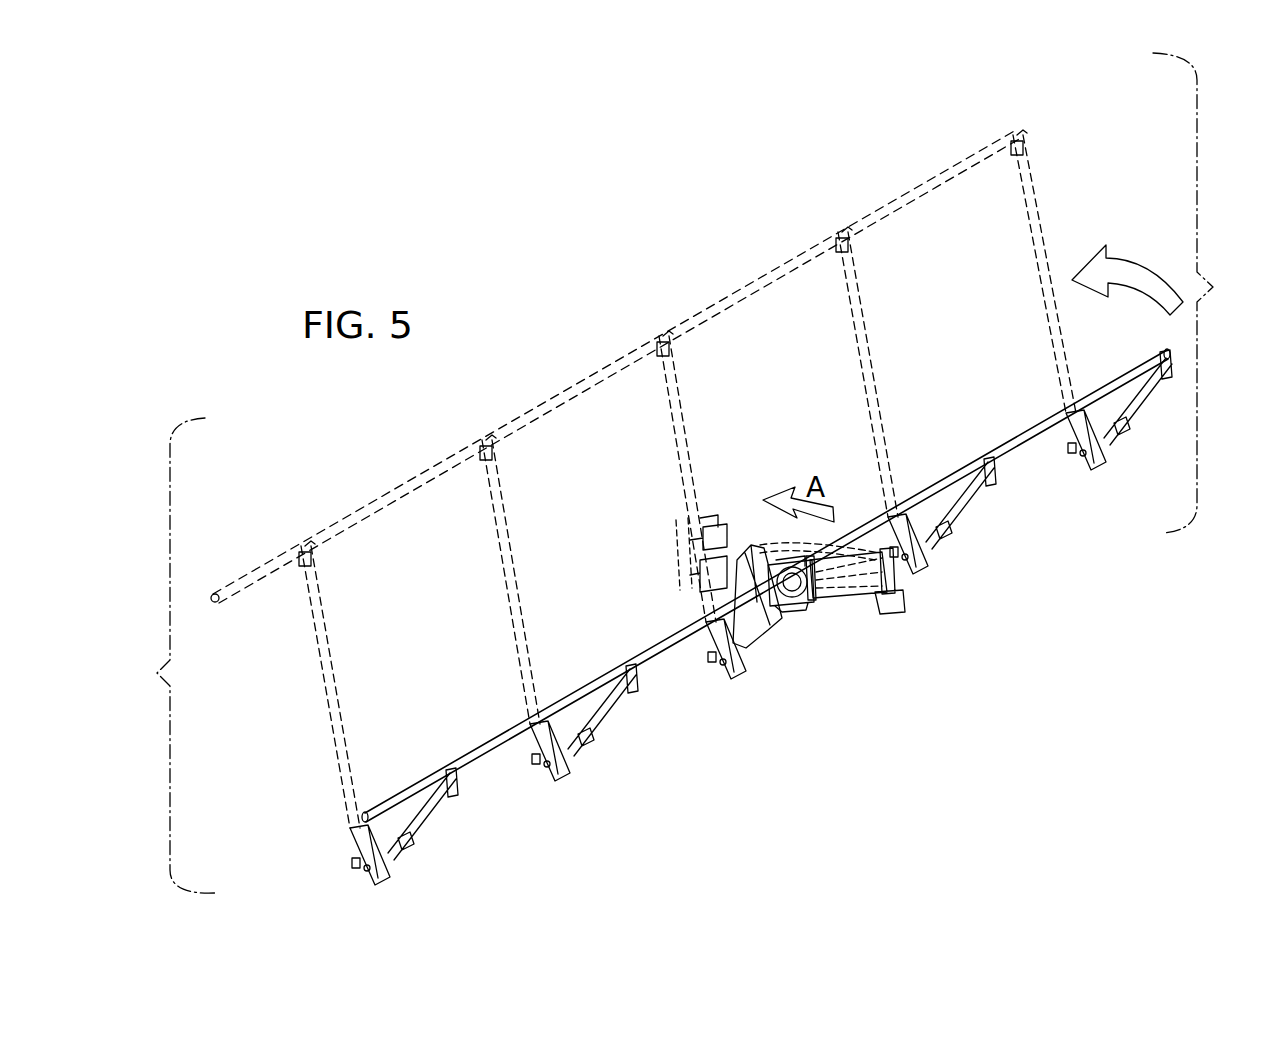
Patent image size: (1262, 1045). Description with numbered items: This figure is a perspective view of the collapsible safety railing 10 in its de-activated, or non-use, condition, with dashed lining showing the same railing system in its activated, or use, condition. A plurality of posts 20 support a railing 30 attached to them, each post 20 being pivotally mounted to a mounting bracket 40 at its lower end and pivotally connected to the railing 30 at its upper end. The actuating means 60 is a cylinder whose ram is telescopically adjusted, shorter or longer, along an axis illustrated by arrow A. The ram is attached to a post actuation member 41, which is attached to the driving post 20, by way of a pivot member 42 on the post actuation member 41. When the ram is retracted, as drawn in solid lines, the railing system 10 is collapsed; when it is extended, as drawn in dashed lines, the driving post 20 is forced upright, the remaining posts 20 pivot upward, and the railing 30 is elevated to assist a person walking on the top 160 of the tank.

The collapsible safety railing 10 is at (158, 675).
The post 20 is at (670, 440).
The railing 30 is at (583, 378).
The mounting bracket 40 is at (392, 873).
The post actuation member 41 is at (700, 535).
The pivot member 42 is at (758, 540).
The actuating means 60 is at (733, 535).
The top 160 is at (890, 603).